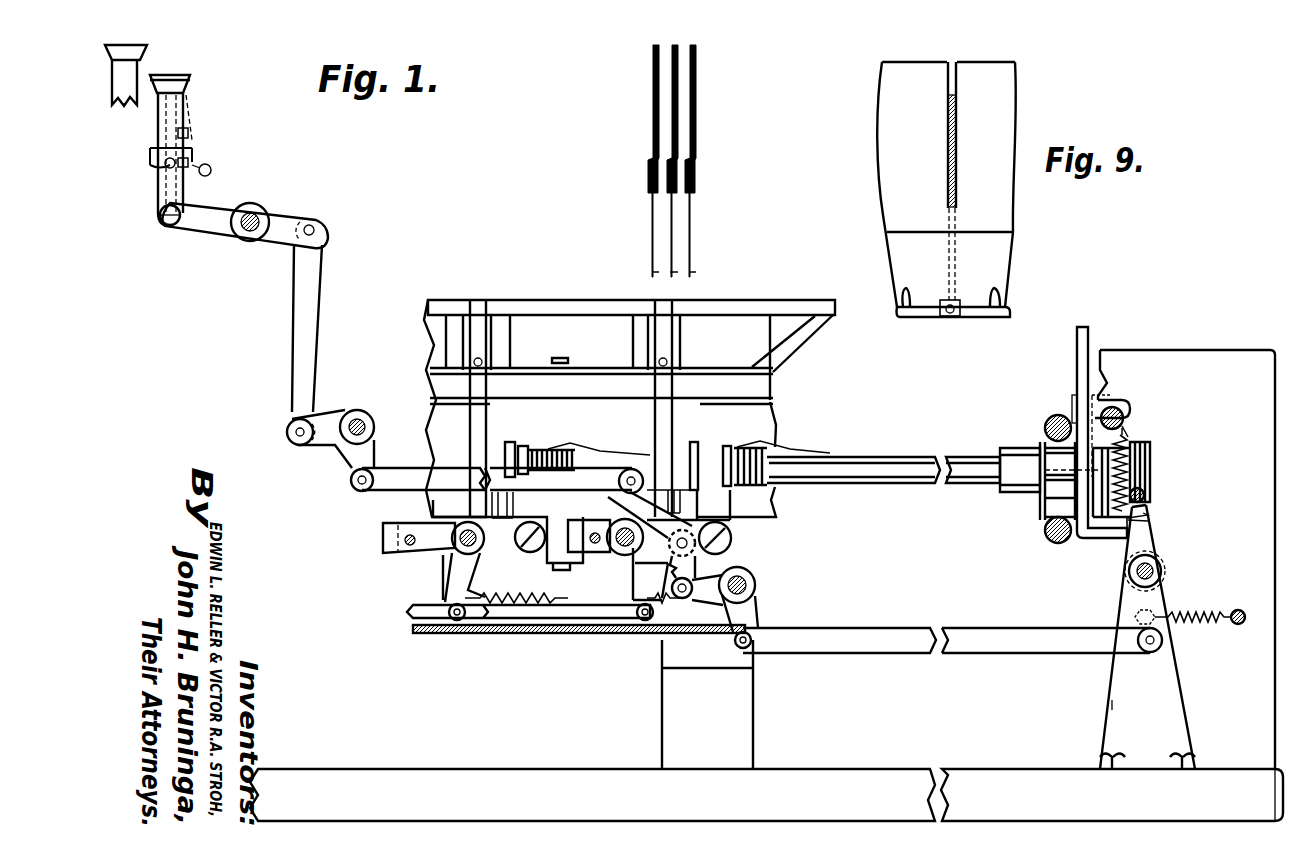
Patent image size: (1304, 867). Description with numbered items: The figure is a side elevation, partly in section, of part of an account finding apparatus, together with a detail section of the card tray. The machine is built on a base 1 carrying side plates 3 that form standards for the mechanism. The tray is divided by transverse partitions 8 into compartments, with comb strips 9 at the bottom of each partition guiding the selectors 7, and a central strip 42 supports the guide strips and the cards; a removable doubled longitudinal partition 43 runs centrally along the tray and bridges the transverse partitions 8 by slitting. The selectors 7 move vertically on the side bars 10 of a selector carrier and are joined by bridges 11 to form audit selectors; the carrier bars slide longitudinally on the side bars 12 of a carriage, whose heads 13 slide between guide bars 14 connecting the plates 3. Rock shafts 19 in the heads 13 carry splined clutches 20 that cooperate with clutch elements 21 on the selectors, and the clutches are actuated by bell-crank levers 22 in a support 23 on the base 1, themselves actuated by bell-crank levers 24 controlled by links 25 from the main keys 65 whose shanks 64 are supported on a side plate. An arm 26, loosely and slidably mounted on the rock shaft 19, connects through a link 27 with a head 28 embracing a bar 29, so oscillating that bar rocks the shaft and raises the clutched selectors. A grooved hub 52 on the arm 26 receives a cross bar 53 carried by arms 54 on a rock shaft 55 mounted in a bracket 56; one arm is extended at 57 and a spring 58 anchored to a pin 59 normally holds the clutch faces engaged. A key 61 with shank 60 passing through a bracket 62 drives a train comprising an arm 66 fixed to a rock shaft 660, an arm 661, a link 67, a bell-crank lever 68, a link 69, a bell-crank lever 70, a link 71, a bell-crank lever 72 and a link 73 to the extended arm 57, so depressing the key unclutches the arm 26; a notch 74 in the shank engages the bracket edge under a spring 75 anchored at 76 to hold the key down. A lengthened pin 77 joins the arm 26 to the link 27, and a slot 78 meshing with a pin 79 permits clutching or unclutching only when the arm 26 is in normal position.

In FIG. 1, the base 1 is at (525, 772).
In FIG. 1, the side plates 3 is at (1168, 355).
In FIG. 1, the selectors 7 is at (485, 327).
In FIG. 1, the transverse partitions 8 is at (696, 70).
In FIG. 9, the transverse partitions 8 is at (877, 155).
In FIG. 1, the comb strips 9 is at (692, 272).
In FIG. 9, the comb strips 9 is at (1005, 297).
In FIG. 1, the side bars of selector carrier 10 is at (728, 372).
In FIG. 1, the bridges 11 is at (603, 308).
In FIG. 1, the side bars of carriage 12 is at (762, 422).
In FIG. 1, the heads 13 is at (1038, 450).
In FIG. 1, the guide bars 14 is at (1055, 414).
In FIG. 1, the rock shaft 19 is at (887, 475).
In FIG. 1, the clutch 20 is at (514, 452).
In FIG. 1, the clutch element 21 is at (503, 500).
In FIG. 1, the bell-crank levers 22 is at (547, 505).
In FIG. 1, the support 23 is at (545, 635).
In FIG. 1, the bell-crank levers 24 is at (440, 552).
In FIG. 1, the links 25 is at (455, 620).
In FIG. 1, the arm 26 is at (1120, 440).
In FIG. 1, the link 27 is at (1090, 490).
In FIG. 1, the head 28 is at (1122, 400).
In FIG. 1, the bar 29 is at (1100, 405).
In FIG. 9, the strip 42 is at (955, 300).
In FIG. 9, the longitudinal partition 43 is at (957, 132).
In FIG. 1, the hub 52 is at (1150, 448).
In FIG. 1, the cross bar 53 is at (1145, 495).
In FIG. 1, the arms 54 is at (1150, 530).
In FIG. 1, the rock shaft 55 is at (1130, 562).
In FIG. 1, the bracket 56 is at (1112, 705).
In FIG. 1, the extended arm 57 is at (1160, 592).
In FIG. 1, the spring 58 is at (1195, 622).
In FIG. 1, the pin 59 is at (1240, 610).
In FIG. 1, the shank 60 is at (160, 190).
In FIG. 1, the key 61 is at (190, 80).
In FIG. 1, the bracket 62 is at (150, 153).
In FIG. 1, the shanks 64 is at (124, 105).
In FIG. 1, the main keys 65 is at (147, 50).
In FIG. 1, the arm 66 is at (212, 240).
In FIG. 1, the link 67 is at (318, 320).
In FIG. 1, the bell-crank lever 68 is at (342, 462).
In FIG. 1, the link 69 is at (438, 476).
In FIG. 1, the bell-crank lever 70 is at (615, 500).
In FIG. 1, the link 71 is at (712, 552).
In FIG. 1, the bell-crank lever 72 is at (733, 616).
In FIG. 1, the link 73 is at (1027, 603).
In FIG. 1, the notch 74 is at (190, 132).
In FIG. 1, the spring 75 is at (190, 165).
In FIG. 1, the anchor 76 is at (211, 168).
In FIG. 1, the pin 77 is at (1128, 520).
In FIG. 1, the slot 78 is at (1095, 535).
In FIG. 1, the pin 79 is at (1140, 480).
In FIG. 1, the rock shaft 660 is at (260, 218).
In FIG. 1, the arm 661 is at (300, 222).